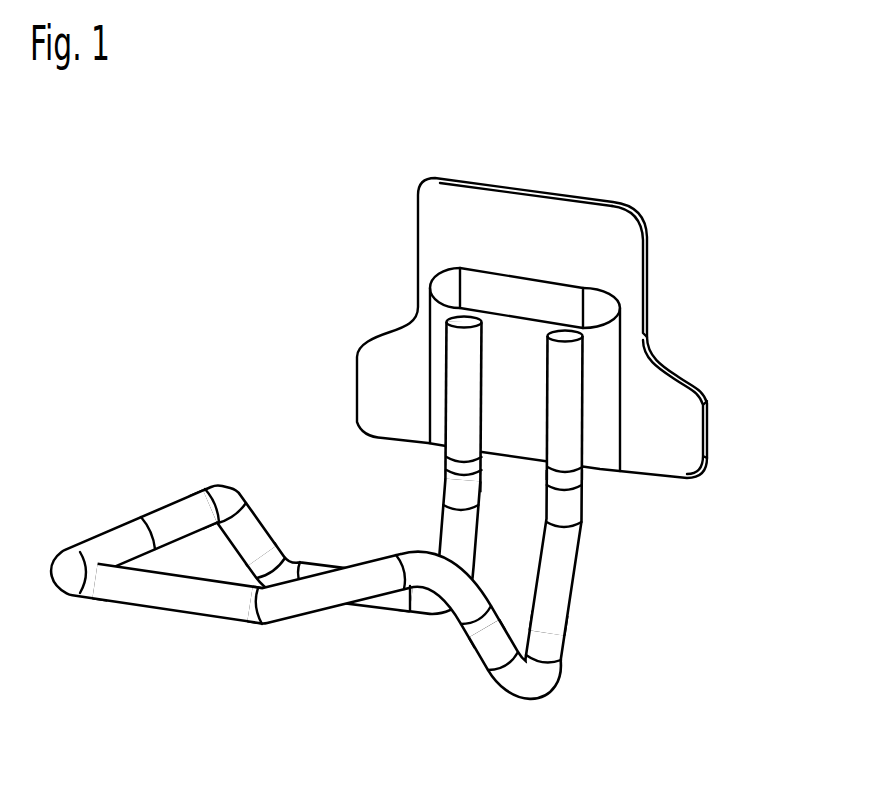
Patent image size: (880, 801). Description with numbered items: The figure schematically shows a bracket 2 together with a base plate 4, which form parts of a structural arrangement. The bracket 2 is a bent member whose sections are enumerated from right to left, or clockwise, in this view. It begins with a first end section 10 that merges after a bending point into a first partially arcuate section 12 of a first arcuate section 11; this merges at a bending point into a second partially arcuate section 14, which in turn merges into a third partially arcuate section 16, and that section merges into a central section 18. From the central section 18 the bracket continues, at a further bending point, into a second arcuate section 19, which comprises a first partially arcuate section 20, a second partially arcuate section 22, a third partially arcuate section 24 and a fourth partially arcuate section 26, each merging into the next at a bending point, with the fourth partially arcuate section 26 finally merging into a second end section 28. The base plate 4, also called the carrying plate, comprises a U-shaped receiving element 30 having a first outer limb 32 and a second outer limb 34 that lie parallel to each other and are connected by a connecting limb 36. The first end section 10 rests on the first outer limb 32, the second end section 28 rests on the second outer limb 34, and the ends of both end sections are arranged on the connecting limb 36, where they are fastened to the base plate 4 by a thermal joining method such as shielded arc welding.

The bracket 2 is at (417, 556).
The base plate 4 is at (643, 213).
The first end section 10 is at (583, 417).
The first arcuate section 11 is at (545, 632).
The first partially arcuate section 12 is at (579, 597).
The second partially arcuate section 14 is at (473, 647).
The third partially arcuate section 16 is at (351, 604).
The central section 18 is at (133, 604).
The second arcuate section 19 is at (280, 509).
The first partially arcuate section 20 is at (178, 500).
The second partially arcuate section 22 is at (260, 506).
The third partially arcuate section 24 is at (331, 563).
The fourth partially arcuate section 26 is at (445, 517).
The second end section 28 is at (445, 394).
The U-shaped receiving element 30 is at (531, 250).
The first outer limb 32 is at (604, 393).
The second outer limb 34 is at (424, 413).
The connecting limb 36 is at (482, 268).